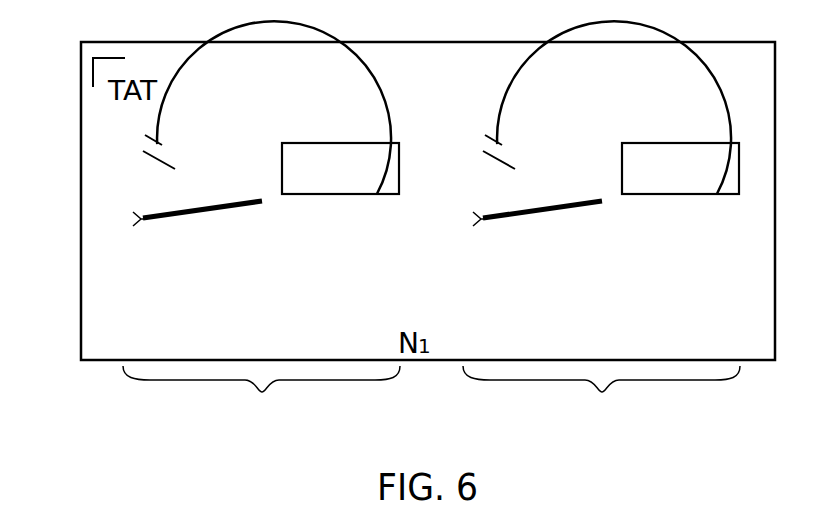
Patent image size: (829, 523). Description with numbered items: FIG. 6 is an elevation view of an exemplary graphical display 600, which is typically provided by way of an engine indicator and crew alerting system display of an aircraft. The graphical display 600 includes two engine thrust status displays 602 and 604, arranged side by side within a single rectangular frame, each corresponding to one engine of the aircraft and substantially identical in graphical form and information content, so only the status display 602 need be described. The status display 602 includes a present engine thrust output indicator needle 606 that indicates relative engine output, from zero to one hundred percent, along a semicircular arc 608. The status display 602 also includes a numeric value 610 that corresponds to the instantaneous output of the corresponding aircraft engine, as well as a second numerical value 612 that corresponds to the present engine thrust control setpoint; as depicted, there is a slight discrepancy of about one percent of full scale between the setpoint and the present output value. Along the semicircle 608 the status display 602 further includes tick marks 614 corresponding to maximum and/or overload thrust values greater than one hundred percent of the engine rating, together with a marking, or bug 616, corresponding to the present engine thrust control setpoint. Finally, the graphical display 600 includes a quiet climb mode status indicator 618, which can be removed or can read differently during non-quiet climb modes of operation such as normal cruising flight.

The graphical display 600 is at (660, 42).
The engine thrust status display 602 is at (261, 400).
The engine thrust status display 604 is at (601, 228).
The present engine thrust output indicator needle 606 is at (197, 212).
The semicircular arc 608 is at (350, 276).
The numeric value 610 is at (298, 143).
The second numerical value 612 is at (340, 100).
The tick marks 614 is at (136, 139).
The bug 616 is at (120, 220).
The quiet climb mode status indicator 618 is at (482, 70).